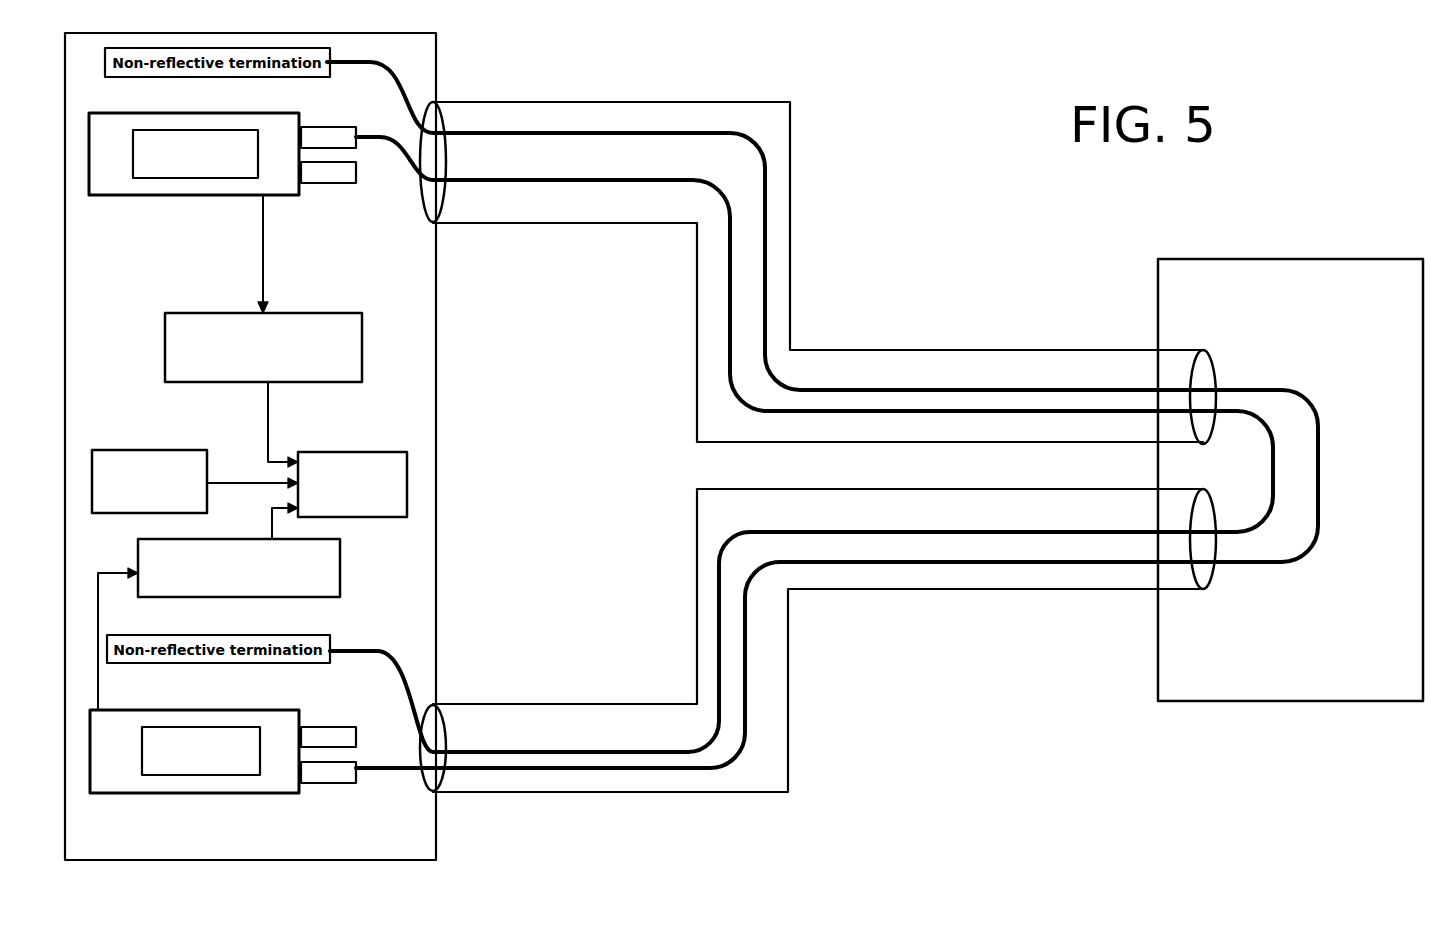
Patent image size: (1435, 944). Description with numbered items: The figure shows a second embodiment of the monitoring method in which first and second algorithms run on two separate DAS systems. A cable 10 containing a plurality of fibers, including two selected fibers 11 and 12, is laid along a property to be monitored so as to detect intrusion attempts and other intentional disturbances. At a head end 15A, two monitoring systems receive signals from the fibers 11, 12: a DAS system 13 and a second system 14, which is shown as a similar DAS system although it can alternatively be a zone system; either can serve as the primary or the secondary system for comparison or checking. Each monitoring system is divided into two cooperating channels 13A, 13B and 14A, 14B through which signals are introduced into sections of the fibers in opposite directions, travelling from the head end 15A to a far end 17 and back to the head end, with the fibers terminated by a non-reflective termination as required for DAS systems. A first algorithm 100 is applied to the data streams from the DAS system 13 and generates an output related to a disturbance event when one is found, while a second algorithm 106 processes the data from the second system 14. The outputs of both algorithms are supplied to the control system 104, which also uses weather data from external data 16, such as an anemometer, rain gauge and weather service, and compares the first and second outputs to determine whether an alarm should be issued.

The cable 10 is at (775, 158).
The fiber 11 is at (543, 167).
The fiber 12 is at (602, 130).
The DAS system 13 is at (185, 195).
The channel 13A is at (345, 147).
The channel 13B is at (323, 183).
The second system 14 is at (272, 715).
The channel 14A is at (323, 725).
The channel 14B is at (327, 785).
The head end 15A is at (410, 610).
The external data 16 is at (157, 448).
The far end 17 is at (1158, 653).
The first algorithm 100 is at (187, 312).
The control system 104 is at (407, 487).
The second algorithm 106 is at (340, 565).